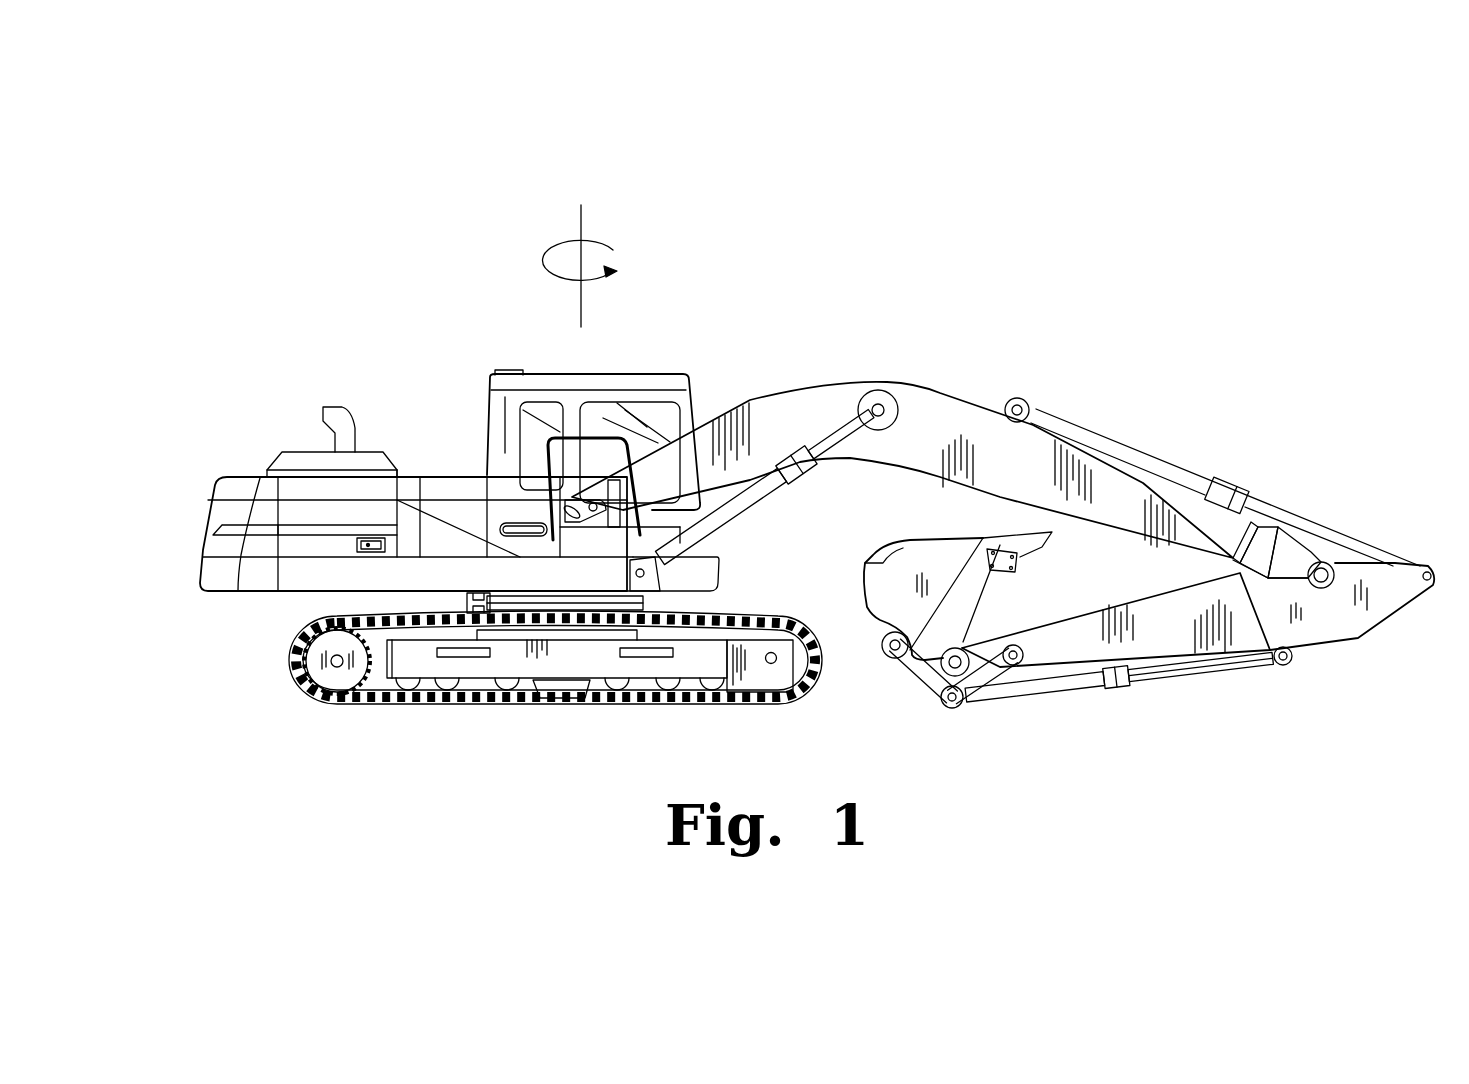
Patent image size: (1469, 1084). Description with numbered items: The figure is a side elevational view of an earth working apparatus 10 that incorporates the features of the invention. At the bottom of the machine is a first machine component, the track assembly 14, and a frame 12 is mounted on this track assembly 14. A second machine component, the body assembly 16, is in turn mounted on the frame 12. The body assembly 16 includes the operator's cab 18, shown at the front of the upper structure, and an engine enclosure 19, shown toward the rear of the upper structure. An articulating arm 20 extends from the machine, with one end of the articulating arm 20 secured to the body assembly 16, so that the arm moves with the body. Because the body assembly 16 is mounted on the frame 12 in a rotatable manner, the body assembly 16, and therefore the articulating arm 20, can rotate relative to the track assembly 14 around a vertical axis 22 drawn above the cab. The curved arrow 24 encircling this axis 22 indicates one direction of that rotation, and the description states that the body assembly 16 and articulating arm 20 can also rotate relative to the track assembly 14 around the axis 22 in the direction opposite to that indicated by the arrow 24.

The earth working apparatus 10 is at (838, 285).
The frame 12 is at (445, 604).
The track assembly 14 is at (292, 719).
The body assembly 16 is at (393, 384).
The cab 18 is at (504, 377).
The engine enclosure 19 is at (237, 462).
The articulating arm 20 is at (1218, 447).
The axis 22 is at (582, 223).
The arrow 24 is at (539, 259).